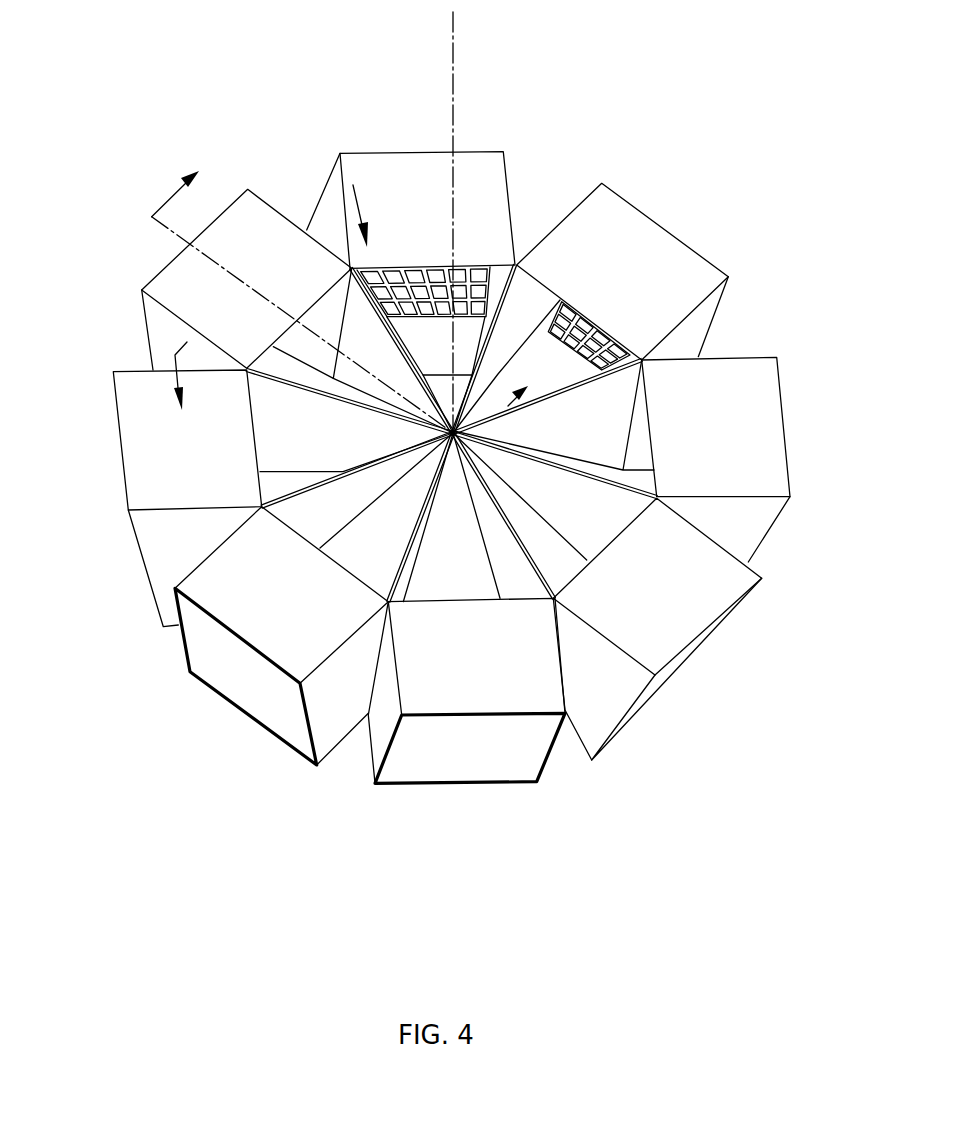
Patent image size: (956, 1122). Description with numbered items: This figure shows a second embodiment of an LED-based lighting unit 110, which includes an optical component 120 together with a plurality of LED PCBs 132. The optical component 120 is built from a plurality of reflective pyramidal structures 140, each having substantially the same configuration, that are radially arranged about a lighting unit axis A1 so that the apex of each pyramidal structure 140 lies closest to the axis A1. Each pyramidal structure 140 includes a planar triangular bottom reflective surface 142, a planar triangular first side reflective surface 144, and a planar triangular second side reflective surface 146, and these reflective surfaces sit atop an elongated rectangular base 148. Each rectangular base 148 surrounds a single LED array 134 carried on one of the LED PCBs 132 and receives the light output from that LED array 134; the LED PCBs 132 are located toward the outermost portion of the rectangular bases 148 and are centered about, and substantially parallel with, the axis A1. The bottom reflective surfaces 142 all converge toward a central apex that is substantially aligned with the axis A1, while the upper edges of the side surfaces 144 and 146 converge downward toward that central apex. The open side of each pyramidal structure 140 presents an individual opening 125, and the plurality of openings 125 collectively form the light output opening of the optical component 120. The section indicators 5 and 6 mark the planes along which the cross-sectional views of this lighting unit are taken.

The lighting unit 110 is at (762, 112).
The optical component 120 is at (630, 85).
The individual opening 125 is at (345, 473).
The LED PCB 132 is at (410, 778).
The LED array 134 is at (430, 280).
The reflective pyramidal structure 140 is at (383, 110).
The bottom reflective surface 142 is at (660, 480).
The first side reflective surface 144 is at (618, 387).
The second side reflective surface 146 is at (317, 523).
The rectangular base 148 is at (730, 378).
The lighting unit axis A1 is at (453, 50).
The section line 5- 5 is at (349, 292).
The section line 6- 6 is at (280, 311).